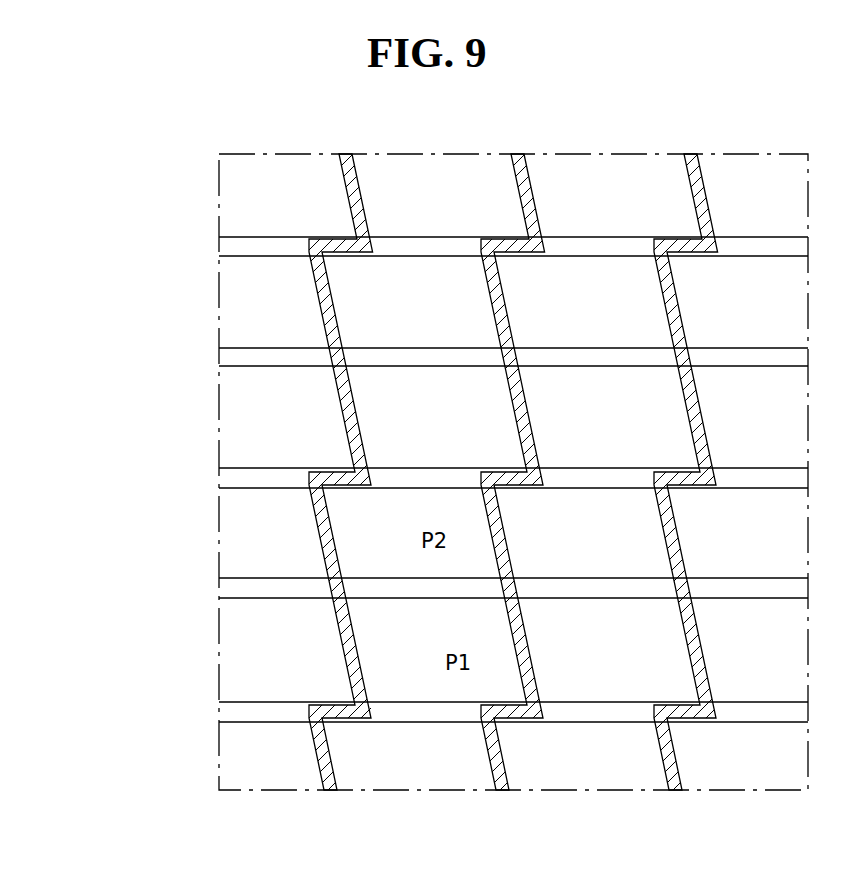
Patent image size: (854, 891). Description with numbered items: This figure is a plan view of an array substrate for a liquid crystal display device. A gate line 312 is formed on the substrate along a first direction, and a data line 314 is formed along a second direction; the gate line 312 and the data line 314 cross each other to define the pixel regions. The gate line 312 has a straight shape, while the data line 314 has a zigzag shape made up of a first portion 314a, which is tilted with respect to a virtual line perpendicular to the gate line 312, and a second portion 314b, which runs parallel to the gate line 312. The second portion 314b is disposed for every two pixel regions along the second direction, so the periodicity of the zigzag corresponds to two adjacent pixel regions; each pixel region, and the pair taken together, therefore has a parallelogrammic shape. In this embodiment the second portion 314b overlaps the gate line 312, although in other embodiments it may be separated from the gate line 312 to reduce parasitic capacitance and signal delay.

The gate line 312 is at (412, 722).
The data line 314 is at (376, 472).
The first portion 314a is at (323, 544).
The second portion 314b is at (331, 703).